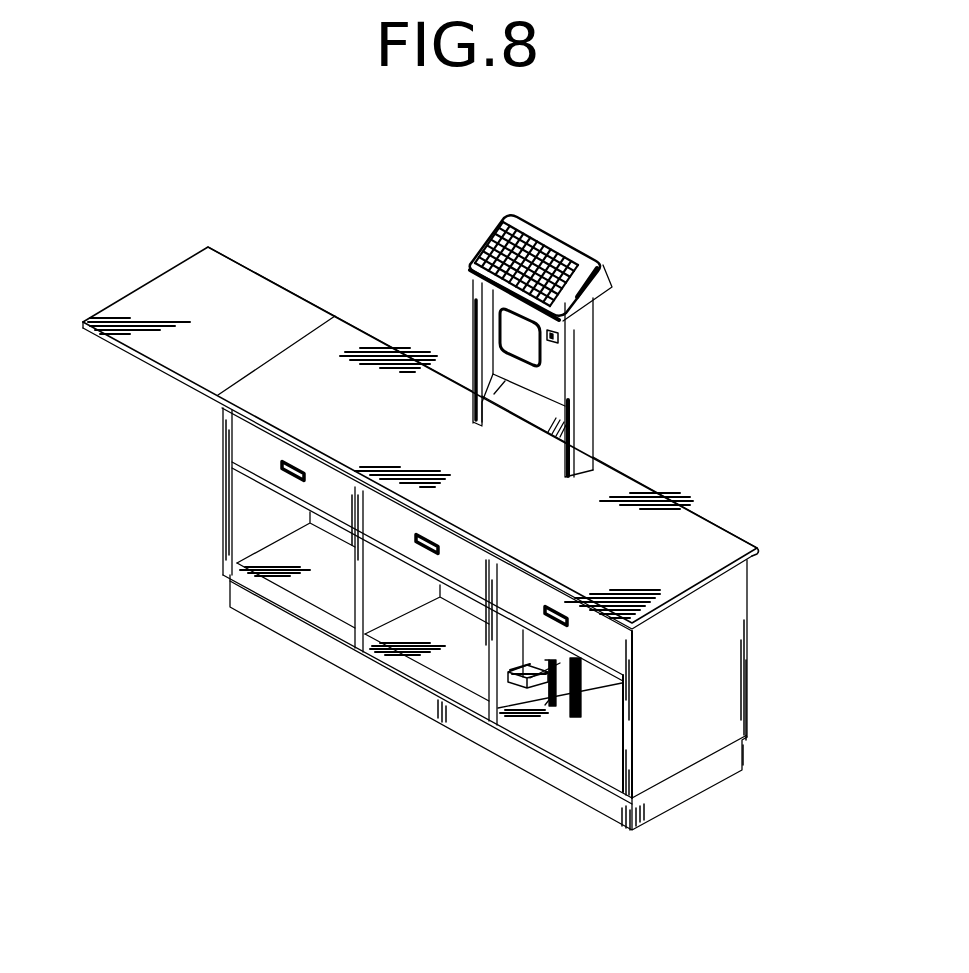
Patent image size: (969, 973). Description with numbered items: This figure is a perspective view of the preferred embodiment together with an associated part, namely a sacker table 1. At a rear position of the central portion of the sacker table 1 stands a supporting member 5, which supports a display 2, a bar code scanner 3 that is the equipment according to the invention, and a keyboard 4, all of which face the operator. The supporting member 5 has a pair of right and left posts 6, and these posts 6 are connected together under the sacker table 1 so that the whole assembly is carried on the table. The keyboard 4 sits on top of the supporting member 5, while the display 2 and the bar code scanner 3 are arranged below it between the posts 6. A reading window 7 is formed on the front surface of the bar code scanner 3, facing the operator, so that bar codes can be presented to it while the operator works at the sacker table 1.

The sacker table 1 is at (345, 318).
The display 2 is at (573, 433).
The bar code scanner 3 is at (552, 362).
The keyboard 4 is at (543, 242).
The supporting member 5 is at (488, 363).
The posts 6 is at (472, 287).
The reading window 7 is at (525, 343).